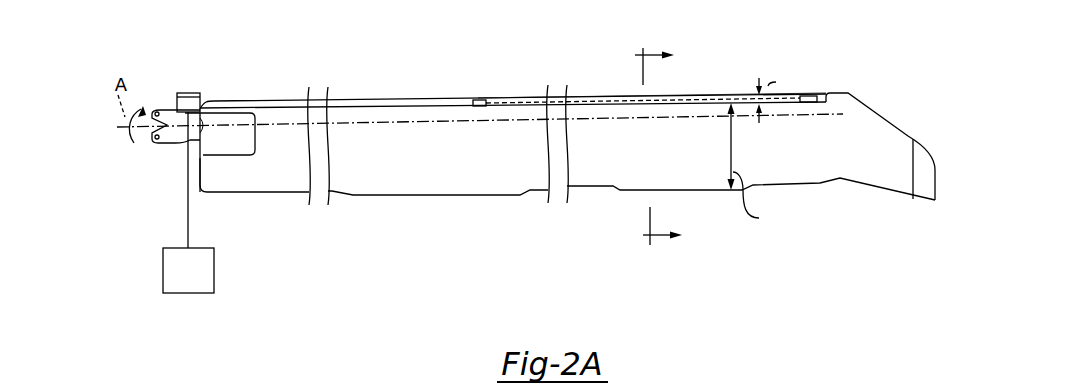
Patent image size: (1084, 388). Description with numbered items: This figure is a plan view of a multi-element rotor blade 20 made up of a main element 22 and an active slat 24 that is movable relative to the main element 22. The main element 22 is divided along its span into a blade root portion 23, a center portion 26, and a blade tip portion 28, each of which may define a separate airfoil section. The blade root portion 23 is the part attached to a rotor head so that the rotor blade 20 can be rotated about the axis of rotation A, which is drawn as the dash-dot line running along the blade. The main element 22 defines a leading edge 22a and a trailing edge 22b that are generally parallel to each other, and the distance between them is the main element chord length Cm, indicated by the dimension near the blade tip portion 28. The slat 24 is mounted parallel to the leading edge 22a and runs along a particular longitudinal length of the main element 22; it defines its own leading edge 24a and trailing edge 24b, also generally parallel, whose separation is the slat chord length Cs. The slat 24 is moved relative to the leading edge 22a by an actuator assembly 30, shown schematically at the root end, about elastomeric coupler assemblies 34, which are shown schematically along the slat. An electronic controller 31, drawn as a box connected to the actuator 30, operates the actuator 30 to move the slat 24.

The multi-element rotor blade 20 is at (446, 74).
The main element 22 is at (382, 124).
The leading edge 22a is at (277, 100).
The trailing edge 22b is at (247, 193).
The blade root portion 23 is at (187, 74).
The active slat 24 is at (730, 84).
The leading edge 24a is at (590, 96).
The trailing edge 24b is at (680, 109).
The center portion 26 is at (480, 178).
The blade tip portion 28 is at (938, 160).
The actuator assembly 30 is at (196, 100).
The electronic controller 31 is at (198, 281).
The elastomeric coupler assemblies 34 is at (478, 100).